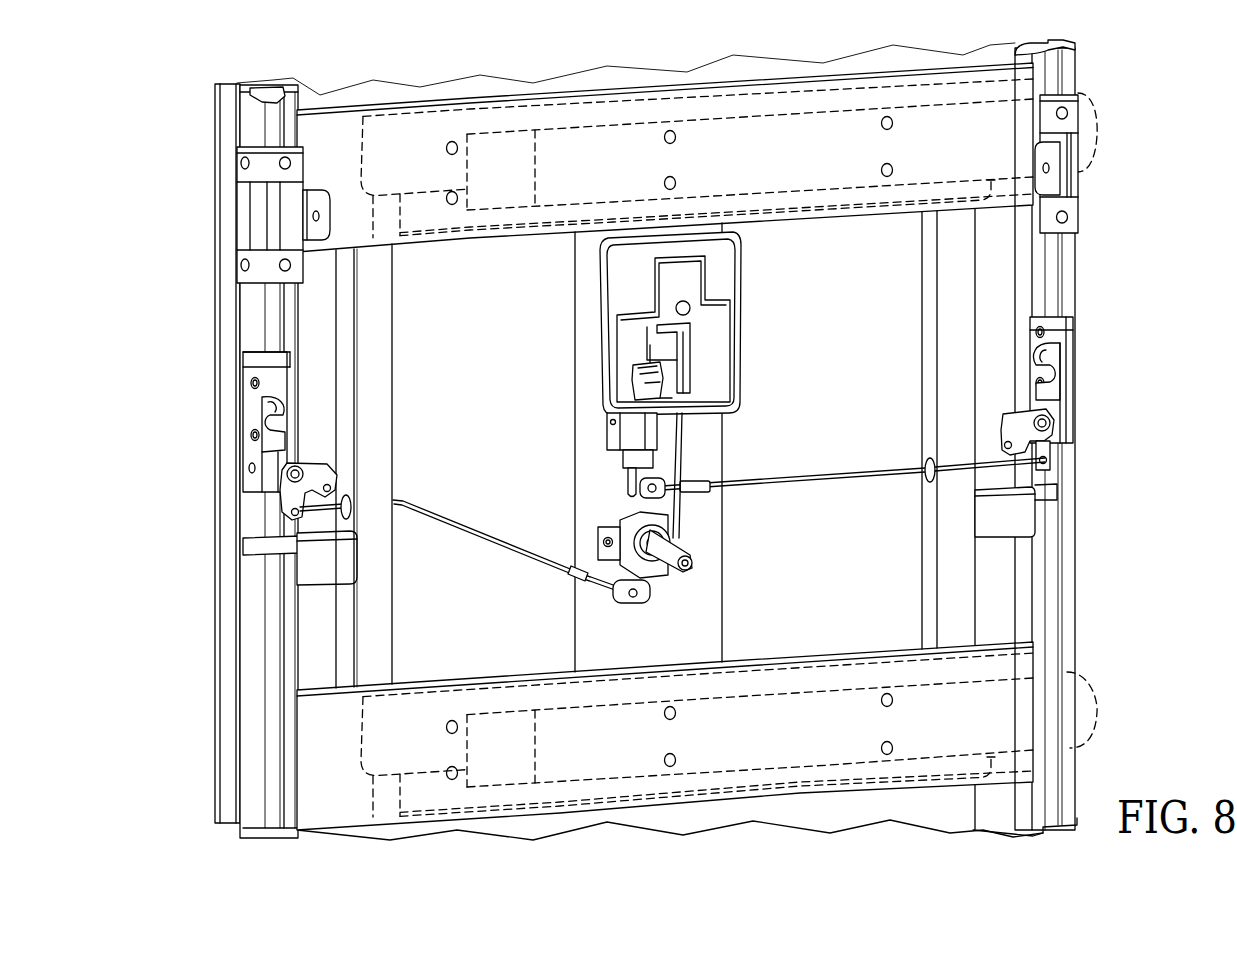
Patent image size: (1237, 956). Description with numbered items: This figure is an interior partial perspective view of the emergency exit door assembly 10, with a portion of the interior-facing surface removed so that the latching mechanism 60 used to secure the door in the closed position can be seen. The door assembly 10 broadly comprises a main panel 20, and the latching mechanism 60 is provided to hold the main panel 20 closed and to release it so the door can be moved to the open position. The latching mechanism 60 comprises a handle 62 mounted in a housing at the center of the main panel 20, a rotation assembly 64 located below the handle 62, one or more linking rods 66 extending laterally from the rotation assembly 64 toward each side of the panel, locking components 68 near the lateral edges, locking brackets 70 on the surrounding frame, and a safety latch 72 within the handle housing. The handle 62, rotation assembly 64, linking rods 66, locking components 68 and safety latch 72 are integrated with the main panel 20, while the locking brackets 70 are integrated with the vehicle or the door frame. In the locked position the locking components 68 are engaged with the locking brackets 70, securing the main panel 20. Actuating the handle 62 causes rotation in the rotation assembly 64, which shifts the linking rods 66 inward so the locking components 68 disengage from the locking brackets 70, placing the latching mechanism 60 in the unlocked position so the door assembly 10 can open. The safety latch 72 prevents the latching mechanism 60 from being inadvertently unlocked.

The door assembly 10 is at (1135, 119).
The main panel 20 is at (438, 322).
The latching mechanism 60 is at (797, 402).
The handle 62 is at (690, 331).
The rotation assembly 64 is at (638, 508).
The linking rods 66 is at (466, 527).
The locking components 68 is at (325, 467).
The locking brackets 70 is at (272, 457).
The safety latch 72 is at (637, 383).